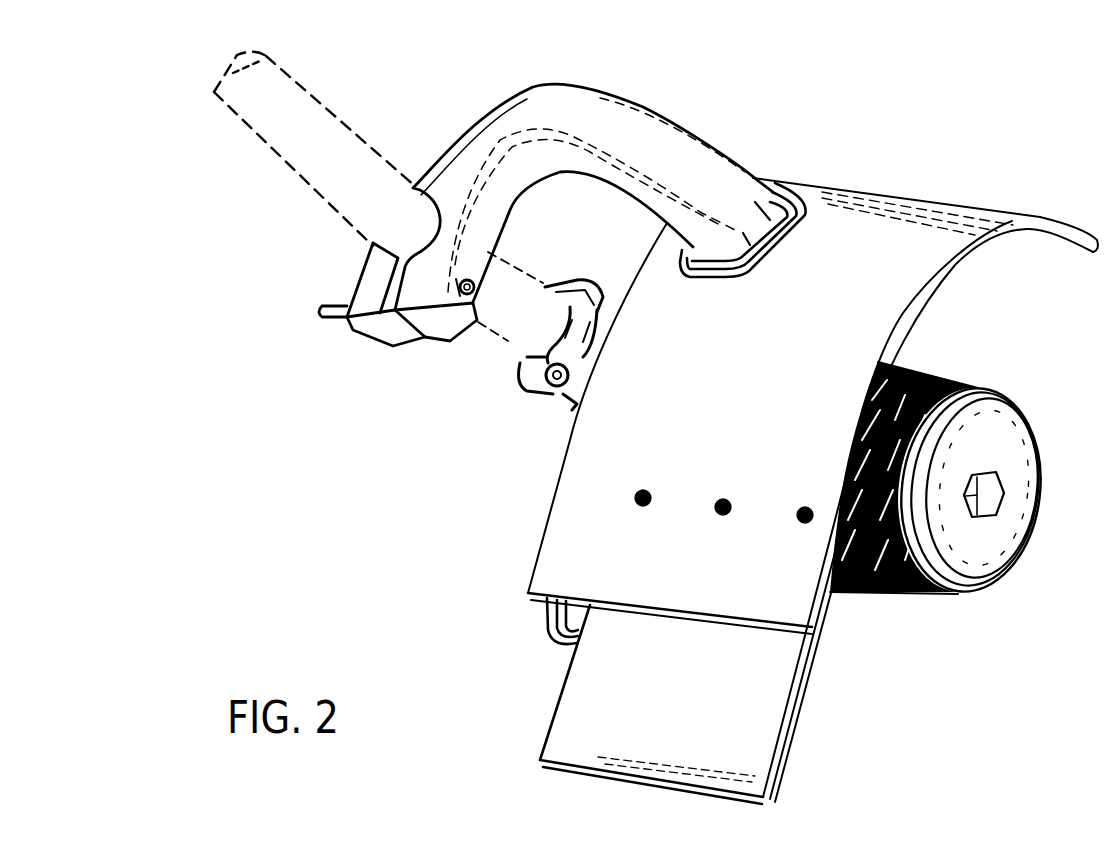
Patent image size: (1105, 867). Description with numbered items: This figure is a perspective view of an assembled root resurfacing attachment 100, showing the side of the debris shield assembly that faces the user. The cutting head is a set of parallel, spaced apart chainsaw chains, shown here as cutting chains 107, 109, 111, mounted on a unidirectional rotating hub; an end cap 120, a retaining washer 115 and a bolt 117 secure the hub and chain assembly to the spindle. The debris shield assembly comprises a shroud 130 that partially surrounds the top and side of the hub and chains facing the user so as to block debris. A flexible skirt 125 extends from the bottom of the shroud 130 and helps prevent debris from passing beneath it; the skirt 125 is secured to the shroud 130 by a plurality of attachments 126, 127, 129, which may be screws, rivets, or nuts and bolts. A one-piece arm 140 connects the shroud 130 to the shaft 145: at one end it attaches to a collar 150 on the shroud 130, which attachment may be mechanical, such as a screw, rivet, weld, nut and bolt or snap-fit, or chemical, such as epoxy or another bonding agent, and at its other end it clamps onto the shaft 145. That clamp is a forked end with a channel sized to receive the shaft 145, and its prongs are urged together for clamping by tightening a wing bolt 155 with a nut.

The root resurfacing attachment 100 is at (761, 491).
The cutting chain 107 is at (892, 597).
The cutting chain 109 is at (867, 587).
The cutting chain 111 is at (832, 590).
The retaining washer 115 is at (997, 550).
The bolt 117 is at (990, 493).
The end cap 120 is at (983, 390).
The flexible skirt 125 is at (582, 692).
The attachment 126 is at (803, 527).
The attachment 127 is at (723, 520).
The mounting hole 129 is at (640, 512).
The shroud 130 is at (573, 498).
The arm 140 is at (595, 122).
The shaft 145 is at (285, 163).
The collar 150 is at (803, 223).
The wing bolt 155 is at (328, 317).